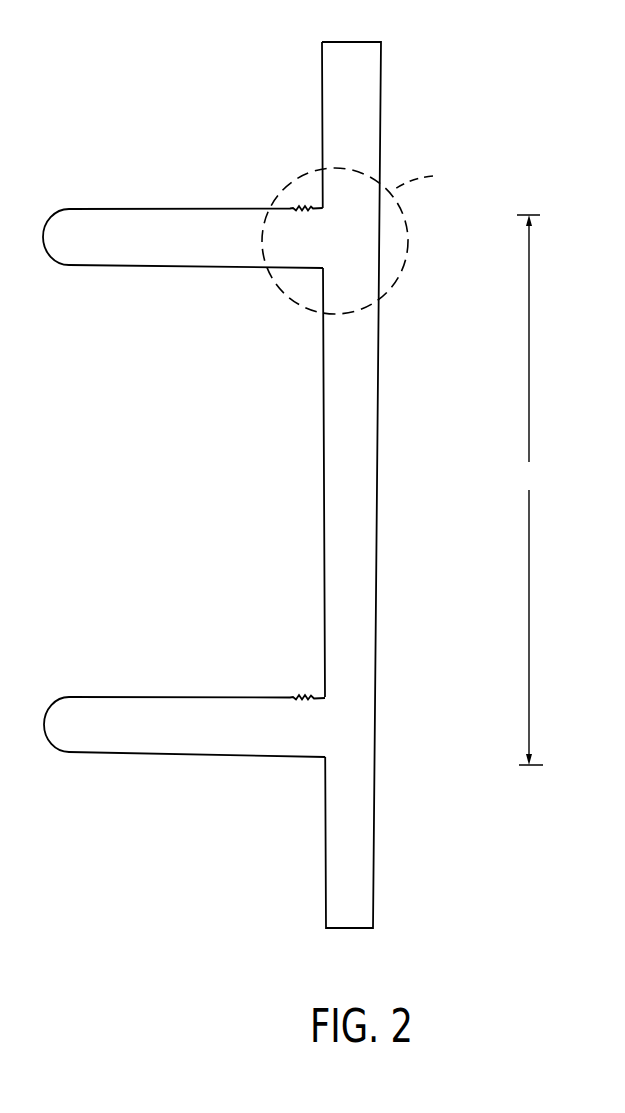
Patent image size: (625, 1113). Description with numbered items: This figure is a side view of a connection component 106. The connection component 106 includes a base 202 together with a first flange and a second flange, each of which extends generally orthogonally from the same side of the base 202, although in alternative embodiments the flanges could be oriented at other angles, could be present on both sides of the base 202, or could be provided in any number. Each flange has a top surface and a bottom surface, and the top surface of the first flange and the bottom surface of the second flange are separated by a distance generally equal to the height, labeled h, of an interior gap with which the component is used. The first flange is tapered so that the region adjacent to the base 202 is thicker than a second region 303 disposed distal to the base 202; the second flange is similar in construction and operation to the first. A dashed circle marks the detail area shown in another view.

The connection component 106 is at (501, 64).
The base 202 is at (378, 358).
The second region 303 is at (48, 257).